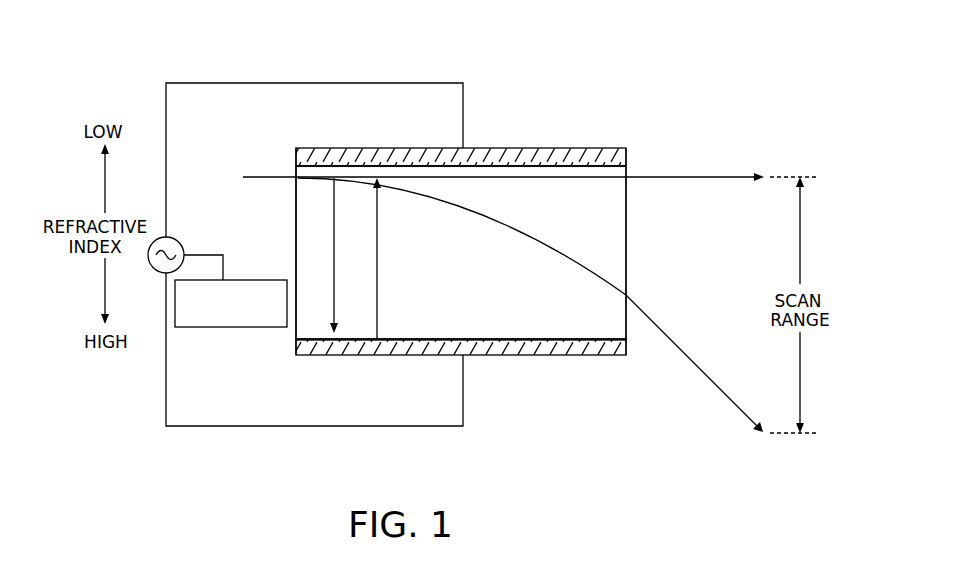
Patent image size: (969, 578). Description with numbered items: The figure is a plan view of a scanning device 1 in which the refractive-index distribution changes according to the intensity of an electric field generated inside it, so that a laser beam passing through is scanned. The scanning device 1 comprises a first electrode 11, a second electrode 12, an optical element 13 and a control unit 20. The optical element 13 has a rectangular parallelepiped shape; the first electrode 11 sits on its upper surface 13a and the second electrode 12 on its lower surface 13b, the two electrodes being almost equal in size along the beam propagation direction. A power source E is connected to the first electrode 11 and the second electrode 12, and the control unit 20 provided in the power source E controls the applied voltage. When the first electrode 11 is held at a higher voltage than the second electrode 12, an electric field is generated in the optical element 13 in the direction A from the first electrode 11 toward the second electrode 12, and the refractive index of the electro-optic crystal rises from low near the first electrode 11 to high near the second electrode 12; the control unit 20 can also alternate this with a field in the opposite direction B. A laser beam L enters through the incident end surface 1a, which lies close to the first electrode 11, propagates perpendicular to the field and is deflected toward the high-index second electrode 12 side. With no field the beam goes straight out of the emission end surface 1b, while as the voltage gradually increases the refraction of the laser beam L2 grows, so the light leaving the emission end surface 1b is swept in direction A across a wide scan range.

The scanning device 1 is at (642, 109).
The first electrode 11 is at (522, 148).
The second electrode 12 is at (519, 356).
The optical element 13 is at (627, 213).
The upper surface 13a is at (568, 148).
The lower surface 13b is at (590, 356).
The incident end surface 1a is at (289, 340).
The emission end surface 1b is at (630, 325).
The control unit 20 is at (222, 328).
The power source E is at (183, 242).
The electric field direction A is at (337, 270).
The opposite electric field direction B is at (379, 254).
The laser beam L is at (707, 175).
The deflected laser beam L2 is at (722, 383).